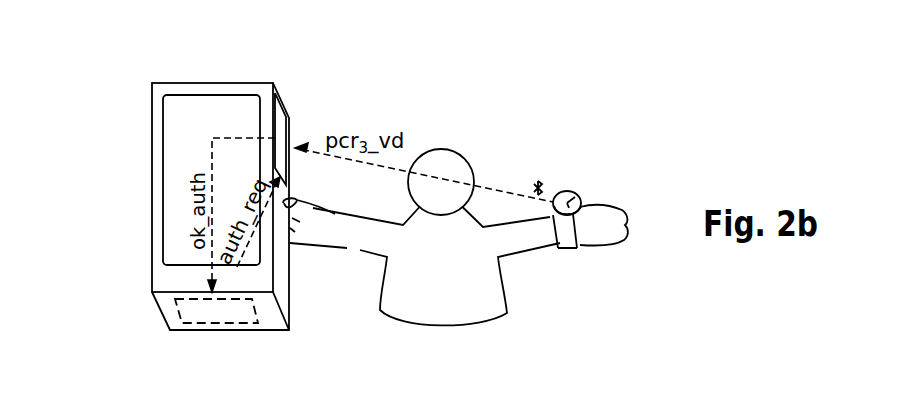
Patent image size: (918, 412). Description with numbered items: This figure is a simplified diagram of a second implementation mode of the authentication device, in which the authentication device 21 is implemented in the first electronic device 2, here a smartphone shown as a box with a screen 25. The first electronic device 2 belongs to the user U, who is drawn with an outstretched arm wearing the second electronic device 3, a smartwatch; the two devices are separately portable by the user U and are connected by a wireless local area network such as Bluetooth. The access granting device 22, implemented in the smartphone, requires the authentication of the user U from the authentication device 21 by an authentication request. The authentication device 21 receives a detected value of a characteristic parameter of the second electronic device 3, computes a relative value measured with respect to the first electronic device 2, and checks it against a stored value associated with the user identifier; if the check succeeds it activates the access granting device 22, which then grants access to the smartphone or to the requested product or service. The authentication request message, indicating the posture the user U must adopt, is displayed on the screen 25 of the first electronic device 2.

The first electronic device 2 is at (202, 92).
The authentication device 21 is at (283, 113).
The access granting device 22 is at (233, 317).
The screen 25 is at (163, 197).
The second electronic device 3 is at (583, 200).
The user U is at (445, 313).